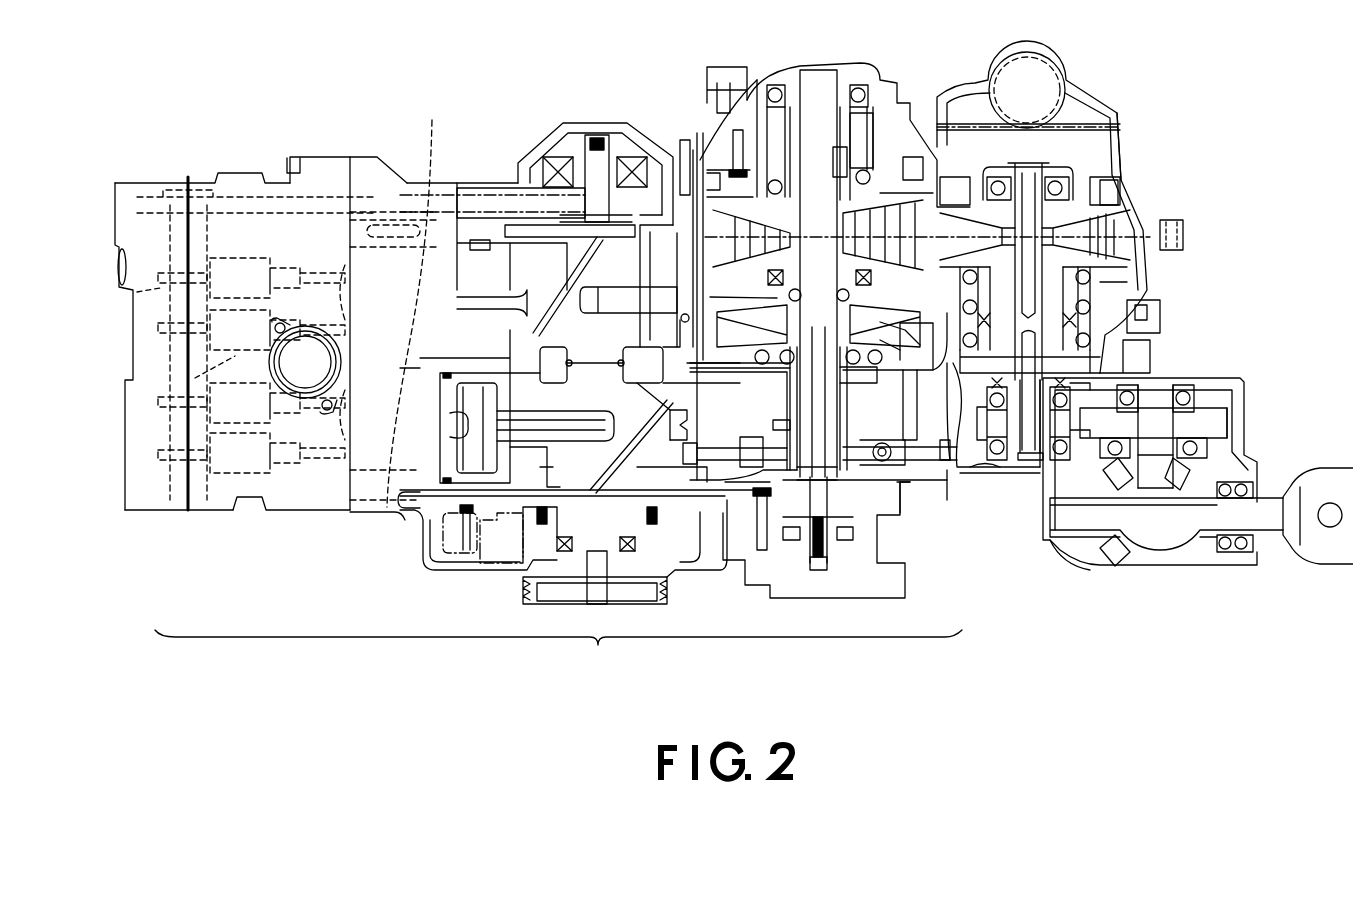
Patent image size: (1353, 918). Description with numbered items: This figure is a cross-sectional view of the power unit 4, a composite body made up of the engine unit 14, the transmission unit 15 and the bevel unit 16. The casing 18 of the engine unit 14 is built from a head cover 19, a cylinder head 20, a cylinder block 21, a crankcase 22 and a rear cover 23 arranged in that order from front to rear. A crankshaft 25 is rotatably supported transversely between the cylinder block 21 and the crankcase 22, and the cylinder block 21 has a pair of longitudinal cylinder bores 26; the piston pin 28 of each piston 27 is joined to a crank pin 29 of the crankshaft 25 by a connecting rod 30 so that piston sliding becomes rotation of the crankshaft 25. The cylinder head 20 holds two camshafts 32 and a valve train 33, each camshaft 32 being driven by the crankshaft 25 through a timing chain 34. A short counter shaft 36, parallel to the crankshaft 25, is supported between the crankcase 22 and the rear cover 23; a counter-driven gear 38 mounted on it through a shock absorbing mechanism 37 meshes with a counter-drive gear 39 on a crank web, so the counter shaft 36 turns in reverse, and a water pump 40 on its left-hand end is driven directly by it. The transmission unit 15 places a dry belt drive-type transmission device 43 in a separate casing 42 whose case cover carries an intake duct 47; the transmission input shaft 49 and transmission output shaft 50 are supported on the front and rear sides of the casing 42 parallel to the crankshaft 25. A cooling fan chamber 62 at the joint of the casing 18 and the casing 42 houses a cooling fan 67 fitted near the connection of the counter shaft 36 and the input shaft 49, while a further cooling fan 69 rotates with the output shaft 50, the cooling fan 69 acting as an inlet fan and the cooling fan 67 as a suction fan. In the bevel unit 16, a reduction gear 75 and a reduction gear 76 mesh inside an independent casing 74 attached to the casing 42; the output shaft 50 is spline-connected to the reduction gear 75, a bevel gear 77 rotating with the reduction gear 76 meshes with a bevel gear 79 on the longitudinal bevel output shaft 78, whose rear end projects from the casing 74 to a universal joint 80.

The power unit 4 is at (657, 87).
The engine unit 14 is at (176, 152).
The transmission unit 15 is at (923, 87).
The bevel unit 16 is at (1078, 570).
The casing 18 is at (558, 403).
The head cover 19 is at (158, 516).
The cylinder head 20 is at (313, 516).
The cylinder block 21 is at (395, 516).
The crankcase 22 is at (736, 522).
The rear cover 23 is at (945, 492).
The crankshaft 25 is at (522, 270).
The cylinder bore 26 is at (480, 243).
The piston 27 is at (422, 460).
The piston pin 28 is at (477, 408).
The crank pin 29 is at (595, 315).
The connecting rod 30 is at (470, 312).
The camshaft 32 is at (137, 293).
The valve train 33 is at (240, 352).
The timing chain 34 is at (330, 163).
The counter shaft 36 is at (790, 385).
The shock absorbing mechanism 37 is at (882, 443).
The counter-driven gear 38 is at (727, 447).
The counter-drive gear 39 is at (679, 452).
The water pump 40 is at (880, 545).
The casing 42 is at (1128, 145).
The belt drive-type transmission device 43 is at (1112, 228).
The intake duct 47 is at (1042, 82).
The transmission input shaft 49 is at (816, 80).
The transmission output shaft 50 is at (1013, 185).
The cooling fan chamber 62 is at (765, 320).
The cooling fan 67 is at (903, 335).
The cooling fan 69 is at (1118, 190).
The casing 74 is at (1239, 372).
The reduction gear 75 is at (980, 470).
The reduction gear 76 is at (1222, 425).
The bevel gear 77 is at (1193, 482).
The bevel output shaft 78 is at (1165, 522).
The bevel gear 79 is at (1115, 565).
The universal joint 80 is at (1330, 566).